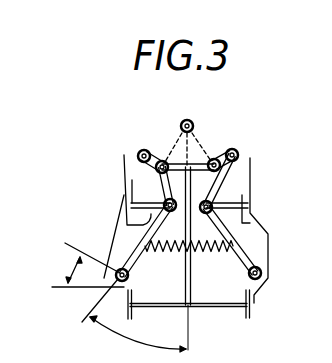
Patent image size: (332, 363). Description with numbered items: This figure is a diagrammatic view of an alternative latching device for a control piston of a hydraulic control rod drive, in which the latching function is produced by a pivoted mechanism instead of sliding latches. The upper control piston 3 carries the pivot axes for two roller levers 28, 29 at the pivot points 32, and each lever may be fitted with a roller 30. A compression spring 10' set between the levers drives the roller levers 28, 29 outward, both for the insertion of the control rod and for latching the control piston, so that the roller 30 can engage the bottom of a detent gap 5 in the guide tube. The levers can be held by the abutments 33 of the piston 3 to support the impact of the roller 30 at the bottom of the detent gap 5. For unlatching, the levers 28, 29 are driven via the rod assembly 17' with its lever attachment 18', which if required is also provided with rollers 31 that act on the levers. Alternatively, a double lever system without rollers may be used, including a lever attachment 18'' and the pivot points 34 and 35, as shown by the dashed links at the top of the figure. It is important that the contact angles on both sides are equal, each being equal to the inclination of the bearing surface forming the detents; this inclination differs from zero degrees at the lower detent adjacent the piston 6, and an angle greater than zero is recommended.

The upper control piston 3 is at (255, 204).
The detent 5 is at (103, 248).
The piston 6 is at (251, 305).
The compression spring 10' is at (189, 261).
The rod assembly 17' is at (204, 258).
The lever attachment 18' is at (225, 141).
The lever attachment 18'' is at (181, 126).
The roller lever 28 is at (108, 230).
The roller lever 29 is at (259, 252).
The roller 30 is at (116, 281).
The roller 31 is at (160, 148).
The pivot point 32 is at (220, 205).
The abutment 33 is at (125, 212).
The pivot point 34 is at (137, 153).
The pivot point 35 is at (187, 119).